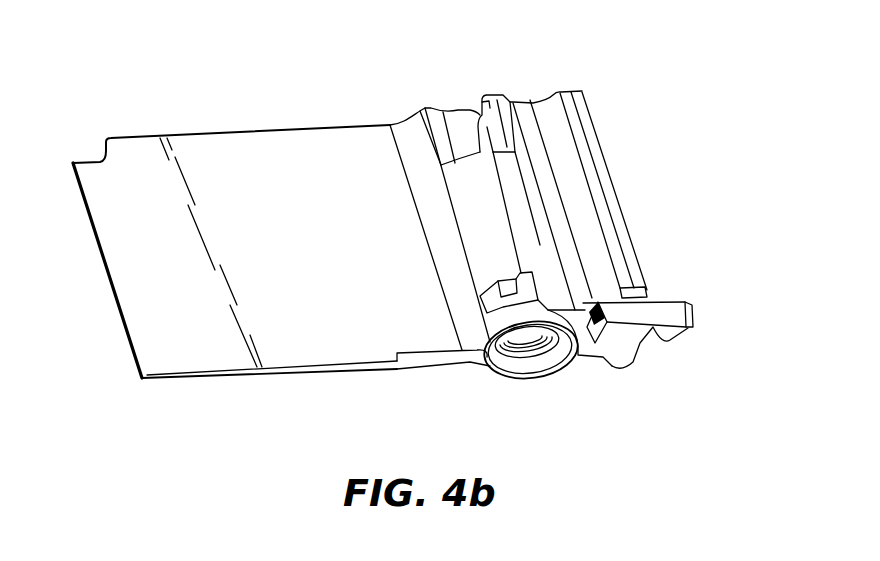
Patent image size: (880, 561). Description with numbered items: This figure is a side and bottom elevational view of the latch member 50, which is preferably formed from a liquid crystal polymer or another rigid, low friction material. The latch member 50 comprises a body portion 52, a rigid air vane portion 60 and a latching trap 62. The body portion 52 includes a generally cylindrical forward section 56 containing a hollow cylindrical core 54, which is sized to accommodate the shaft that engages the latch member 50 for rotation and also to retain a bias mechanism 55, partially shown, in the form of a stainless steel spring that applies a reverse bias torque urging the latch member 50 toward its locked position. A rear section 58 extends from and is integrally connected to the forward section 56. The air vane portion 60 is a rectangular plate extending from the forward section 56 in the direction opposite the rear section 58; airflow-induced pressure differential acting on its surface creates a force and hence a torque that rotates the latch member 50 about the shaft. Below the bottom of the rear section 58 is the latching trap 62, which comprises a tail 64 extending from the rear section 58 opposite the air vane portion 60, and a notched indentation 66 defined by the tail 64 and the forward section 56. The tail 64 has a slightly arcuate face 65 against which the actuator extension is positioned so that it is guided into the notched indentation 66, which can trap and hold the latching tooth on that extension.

The latch member 50 is at (386, 82).
The body portion 52 is at (583, 73).
The hollow cylindrical core 54 is at (522, 366).
The bias mechanism 55 is at (483, 367).
The forward section 56 is at (573, 360).
The rear section 58 is at (597, 162).
The air vane portion 60 is at (294, 262).
The latching trap 62 is at (718, 216).
The tail 64 is at (657, 333).
The arcuate face 65 is at (660, 313).
The notched indentation 66 is at (597, 303).